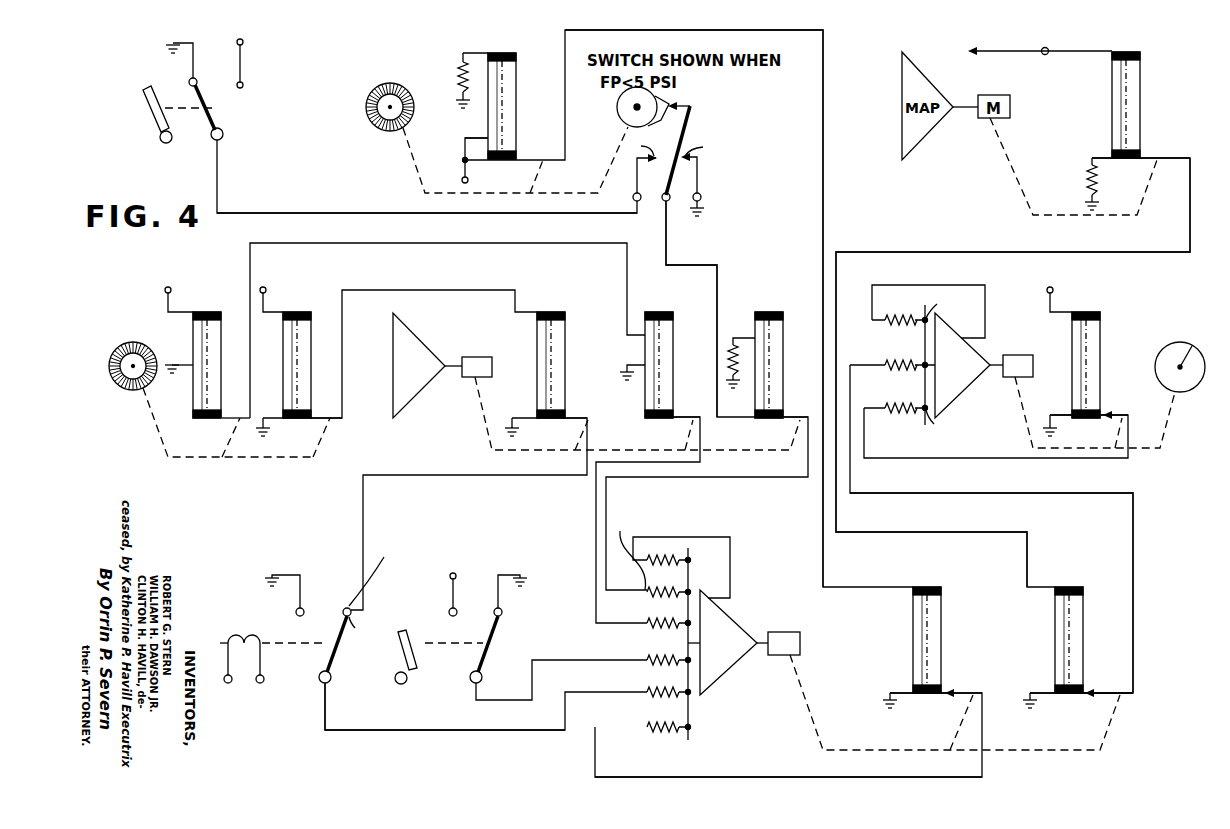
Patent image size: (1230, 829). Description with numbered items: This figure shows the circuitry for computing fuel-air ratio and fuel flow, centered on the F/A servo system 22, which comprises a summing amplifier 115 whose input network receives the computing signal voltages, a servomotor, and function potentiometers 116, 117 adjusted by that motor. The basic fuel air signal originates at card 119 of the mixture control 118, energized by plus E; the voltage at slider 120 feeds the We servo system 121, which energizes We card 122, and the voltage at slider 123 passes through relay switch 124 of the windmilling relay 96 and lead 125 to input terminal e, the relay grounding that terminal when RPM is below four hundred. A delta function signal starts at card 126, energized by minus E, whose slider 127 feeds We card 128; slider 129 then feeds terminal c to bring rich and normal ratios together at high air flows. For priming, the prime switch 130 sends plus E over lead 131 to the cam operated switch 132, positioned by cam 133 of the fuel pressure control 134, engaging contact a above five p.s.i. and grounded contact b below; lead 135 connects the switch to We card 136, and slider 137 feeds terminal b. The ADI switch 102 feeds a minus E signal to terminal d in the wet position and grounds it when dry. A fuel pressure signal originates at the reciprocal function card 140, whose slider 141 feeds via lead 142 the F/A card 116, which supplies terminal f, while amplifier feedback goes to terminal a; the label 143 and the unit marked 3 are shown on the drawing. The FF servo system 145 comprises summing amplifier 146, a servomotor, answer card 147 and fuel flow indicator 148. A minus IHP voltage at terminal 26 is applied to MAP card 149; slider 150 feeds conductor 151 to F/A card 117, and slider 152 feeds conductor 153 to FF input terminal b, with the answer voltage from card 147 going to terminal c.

The prime switch 130 is at (215, 114).
The lead 131 is at (295, 213).
The fuel pressure control 134 is at (394, 84).
The reciprocal function card 140 is at (500, 52).
The slider 141 is at (518, 159).
The cam 133 is at (623, 115).
The cam operated switch 132 is at (690, 121).
The lead 135 is at (718, 284).
The lead 142 is at (824, 161).
The terminal 26 is at (1048, 48).
The computer unit 3 is at (1130, 45).
The MAP card 149 is at (1136, 89).
The slider 150 is at (1152, 158).
The conductor 151 is at (879, 253).
The FF servo system 145 is at (988, 281).
The summing amplifier 146 is at (978, 359).
The answer card 147 is at (1100, 318).
The fuel flow indicator 148 is at (1158, 374).
The conductor 153 is at (1132, 496).
The mixture control 118 is at (141, 346).
The card 126 is at (197, 349).
The slider 127 is at (224, 415).
The card 119 is at (283, 376).
The slider 120 is at (327, 404).
The We servo system 121 is at (460, 335).
The We card 122 is at (537, 397).
The slider 123 is at (571, 415).
The We card 128 is at (668, 303).
The slider 129 is at (690, 407).
The We card 136 is at (778, 347).
The slider 137 is at (803, 409).
The windmilling relay 96 is at (258, 643).
The relay switch 124 is at (334, 652).
The ADI switch 102 is at (480, 651).
The lead 125 is at (440, 732).
The summing amplifier 115 is at (738, 663).
The conductor 143 is at (752, 777).
The F/A servo system 22 is at (860, 620).
The function potentiometer 116 is at (913, 650).
The function potentiometer 117 is at (1055, 649).
The slider 152 is at (1090, 694).